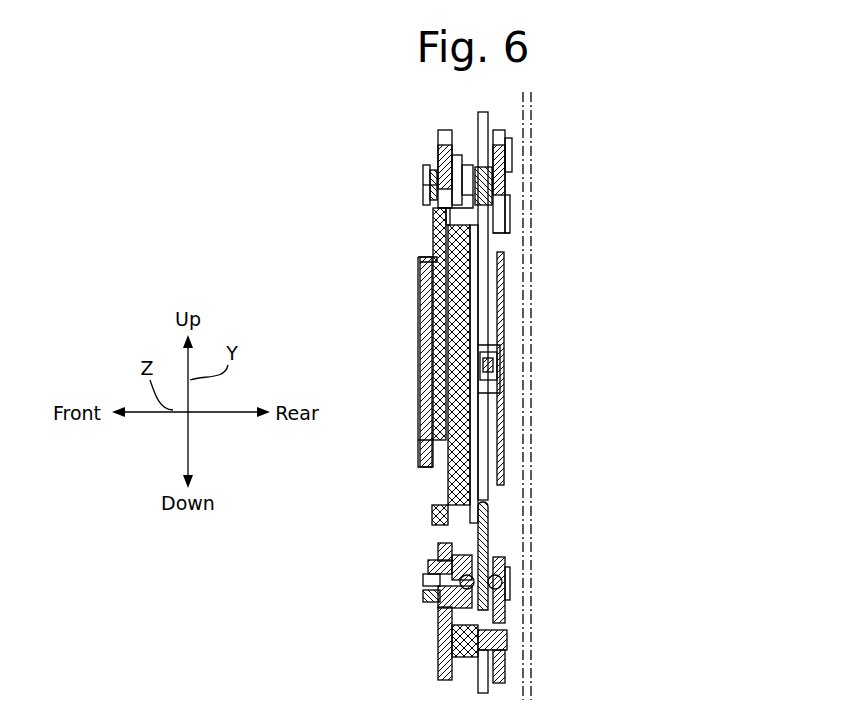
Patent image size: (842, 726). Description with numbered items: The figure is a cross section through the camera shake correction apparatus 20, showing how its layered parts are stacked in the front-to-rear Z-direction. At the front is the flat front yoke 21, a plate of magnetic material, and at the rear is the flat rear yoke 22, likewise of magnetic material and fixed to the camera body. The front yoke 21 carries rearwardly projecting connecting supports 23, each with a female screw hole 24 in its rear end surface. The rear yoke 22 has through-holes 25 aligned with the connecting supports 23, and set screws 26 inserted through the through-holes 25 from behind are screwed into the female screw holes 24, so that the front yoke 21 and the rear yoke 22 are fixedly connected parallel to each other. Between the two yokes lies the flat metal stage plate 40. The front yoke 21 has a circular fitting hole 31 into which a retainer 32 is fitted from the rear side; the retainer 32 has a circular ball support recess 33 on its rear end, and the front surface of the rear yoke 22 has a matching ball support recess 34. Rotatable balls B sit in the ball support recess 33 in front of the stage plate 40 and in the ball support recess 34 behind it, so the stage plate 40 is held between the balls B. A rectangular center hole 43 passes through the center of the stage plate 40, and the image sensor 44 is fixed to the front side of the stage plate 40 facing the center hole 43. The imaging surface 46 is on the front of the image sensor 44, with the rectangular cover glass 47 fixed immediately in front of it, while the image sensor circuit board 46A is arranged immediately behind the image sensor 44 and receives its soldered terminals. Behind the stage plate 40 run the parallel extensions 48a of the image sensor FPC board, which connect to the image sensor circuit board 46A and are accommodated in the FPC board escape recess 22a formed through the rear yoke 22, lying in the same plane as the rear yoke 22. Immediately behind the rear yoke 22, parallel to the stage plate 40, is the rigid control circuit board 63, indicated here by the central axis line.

The camera shake correction apparatus 20 is at (300, 208).
The front yoke 21 is at (438, 155).
The rear yoke 22 is at (500, 215).
The FPC board escape recess 22a is at (500, 234).
The connecting support 23 is at (427, 182).
The female screw hole 24 is at (510, 643).
The through-hole 25 is at (508, 652).
The set screw 26 is at (505, 638).
The fitting hole 31 is at (437, 607).
The retainer 32 is at (430, 565).
The ball support recess 33 is at (430, 583).
The ball support recess 34 is at (510, 572).
The stage plate 40 is at (486, 121).
The center hole 43 is at (480, 520).
The image sensor 44 is at (455, 378).
The imaging surface 46 is at (440, 325).
The image sensor circuit board 46A is at (480, 343).
The cover glass 47 is at (422, 280).
The parallel extension 48a is at (503, 425).
The control circuit board 63 is at (527, 365).
The ball B is at (484, 565).